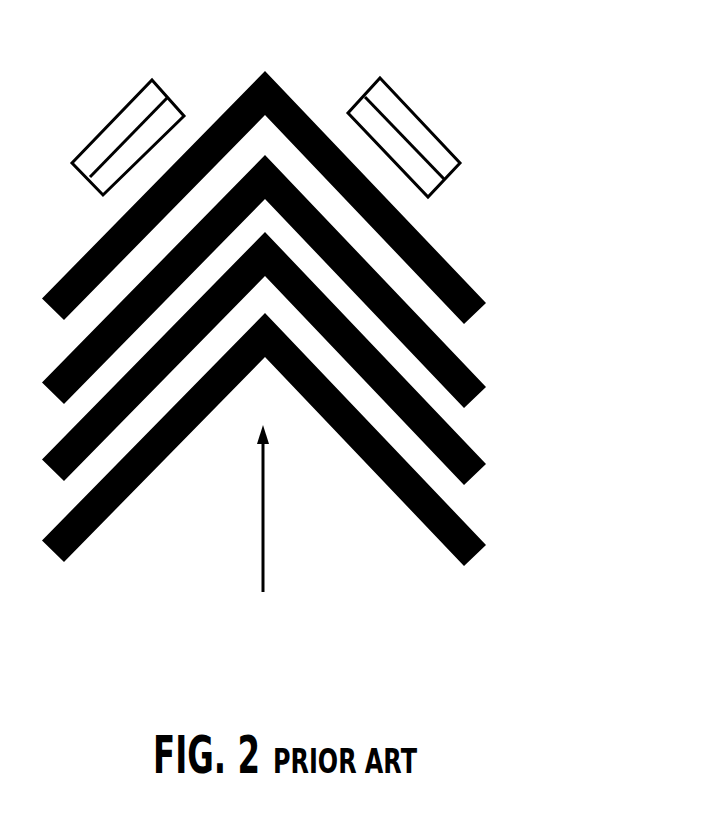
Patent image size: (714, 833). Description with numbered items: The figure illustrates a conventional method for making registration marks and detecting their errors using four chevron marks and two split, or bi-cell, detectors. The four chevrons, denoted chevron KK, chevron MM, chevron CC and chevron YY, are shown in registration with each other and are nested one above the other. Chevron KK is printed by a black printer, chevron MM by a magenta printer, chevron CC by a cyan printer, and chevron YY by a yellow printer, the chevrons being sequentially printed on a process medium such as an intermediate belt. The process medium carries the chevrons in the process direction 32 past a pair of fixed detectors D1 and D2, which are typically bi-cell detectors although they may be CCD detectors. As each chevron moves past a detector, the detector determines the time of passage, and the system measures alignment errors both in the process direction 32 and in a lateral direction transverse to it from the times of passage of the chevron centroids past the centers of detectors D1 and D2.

The chevron KK is at (522, 315).
The chevron MM is at (522, 399).
The chevron CC is at (522, 475).
The chevron YY is at (522, 560).
The detector D1 is at (186, 74).
The detector D2 is at (344, 65).
The process direction 32 is at (263, 532).